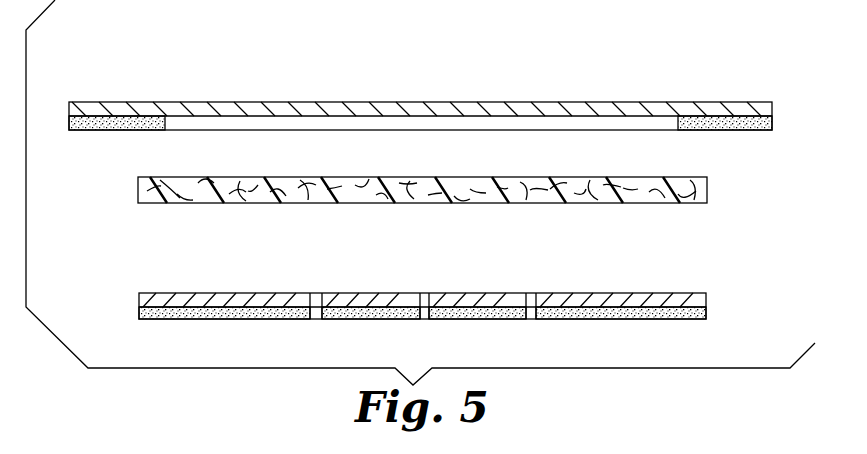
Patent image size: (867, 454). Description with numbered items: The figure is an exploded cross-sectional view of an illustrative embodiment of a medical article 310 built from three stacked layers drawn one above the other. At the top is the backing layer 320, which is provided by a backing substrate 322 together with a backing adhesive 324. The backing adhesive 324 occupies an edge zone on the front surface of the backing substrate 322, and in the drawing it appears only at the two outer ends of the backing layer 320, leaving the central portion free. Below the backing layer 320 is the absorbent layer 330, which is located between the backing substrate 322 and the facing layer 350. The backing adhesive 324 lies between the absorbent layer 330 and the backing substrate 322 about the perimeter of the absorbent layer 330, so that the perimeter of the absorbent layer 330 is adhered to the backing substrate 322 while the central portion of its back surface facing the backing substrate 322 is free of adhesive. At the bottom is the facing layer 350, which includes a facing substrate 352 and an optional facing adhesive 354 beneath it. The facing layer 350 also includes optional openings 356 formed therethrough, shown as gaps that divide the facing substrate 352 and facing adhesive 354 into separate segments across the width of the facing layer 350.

The medical article 310 is at (360, 85).
The backing layer 320 is at (193, 101).
The backing substrate 322 is at (652, 110).
The backing adhesive 324 is at (750, 130).
The absorbent layer 330 is at (140, 182).
The facing layer 350 is at (158, 292).
The facing substrate 352 is at (706, 300).
The facing adhesive 354 is at (705, 312).
The openings 356 is at (530, 292).